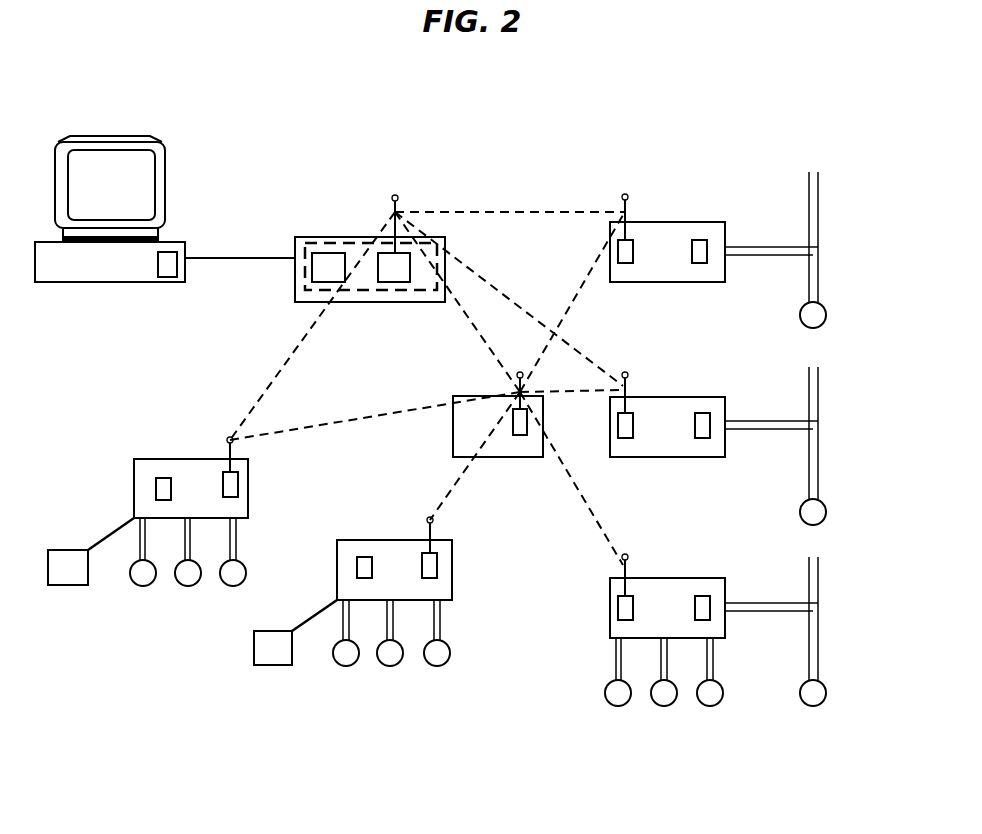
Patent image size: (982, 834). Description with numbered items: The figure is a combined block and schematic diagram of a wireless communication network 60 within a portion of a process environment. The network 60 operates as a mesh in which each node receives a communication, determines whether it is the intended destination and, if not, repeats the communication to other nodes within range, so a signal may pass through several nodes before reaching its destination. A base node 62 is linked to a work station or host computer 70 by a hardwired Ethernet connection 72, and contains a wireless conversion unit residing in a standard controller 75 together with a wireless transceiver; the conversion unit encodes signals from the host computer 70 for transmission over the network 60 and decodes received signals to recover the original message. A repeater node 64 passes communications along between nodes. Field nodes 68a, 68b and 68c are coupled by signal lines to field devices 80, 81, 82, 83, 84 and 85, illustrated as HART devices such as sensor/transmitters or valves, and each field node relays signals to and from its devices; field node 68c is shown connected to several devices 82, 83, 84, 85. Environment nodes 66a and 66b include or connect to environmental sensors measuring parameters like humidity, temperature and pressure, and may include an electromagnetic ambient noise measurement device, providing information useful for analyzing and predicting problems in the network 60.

The communication network 60 is at (537, 178).
The base node 62 is at (323, 237).
The repeater node 64 is at (462, 396).
The environment node 66a is at (250, 482).
The environment node 66b is at (454, 569).
The field node 68a is at (704, 222).
The field node 68b is at (702, 397).
The field node 68c is at (700, 578).
The host computer 70 is at (159, 137).
The Ethernet connection 72 is at (238, 256).
The controller 75 is at (362, 243).
The field device 80 is at (827, 315).
The field device 81 is at (827, 512).
The field device 82 is at (827, 693).
The field device 83 is at (712, 707).
The field device 84 is at (665, 707).
The field device 85 is at (619, 707).